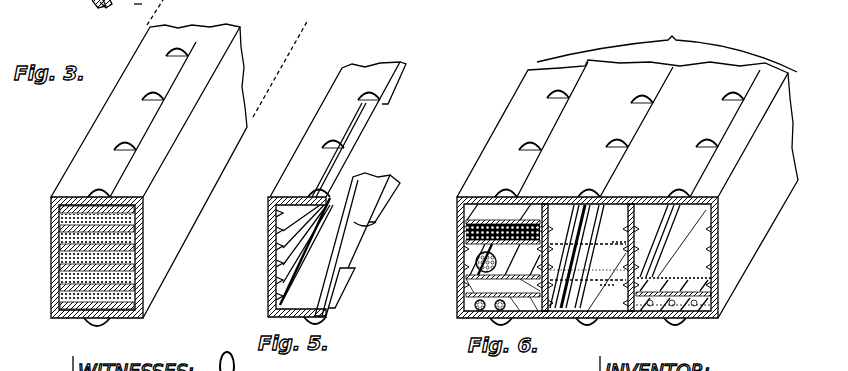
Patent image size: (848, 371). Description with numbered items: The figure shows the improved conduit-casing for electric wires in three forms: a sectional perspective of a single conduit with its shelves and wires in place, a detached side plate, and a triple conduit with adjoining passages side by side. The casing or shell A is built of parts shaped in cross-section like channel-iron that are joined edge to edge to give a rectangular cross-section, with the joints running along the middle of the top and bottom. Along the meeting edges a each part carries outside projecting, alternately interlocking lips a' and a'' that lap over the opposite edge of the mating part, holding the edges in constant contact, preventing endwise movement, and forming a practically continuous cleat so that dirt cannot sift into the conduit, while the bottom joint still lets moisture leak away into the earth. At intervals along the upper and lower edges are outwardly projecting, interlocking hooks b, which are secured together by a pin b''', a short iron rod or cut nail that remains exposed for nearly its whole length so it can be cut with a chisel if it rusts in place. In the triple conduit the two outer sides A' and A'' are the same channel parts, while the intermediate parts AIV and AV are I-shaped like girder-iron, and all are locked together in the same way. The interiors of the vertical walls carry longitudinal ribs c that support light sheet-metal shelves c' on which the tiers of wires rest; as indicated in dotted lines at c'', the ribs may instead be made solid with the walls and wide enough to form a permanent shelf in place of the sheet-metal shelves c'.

In FIG. 6, the casing or shell of the conduit A is at (627, 107).
In FIG. 6, the outer side part of the conduit-casing A' is at (487, 258).
In FIG. 6, the outer side part of the conduit-casing A'' is at (758, 195).
In FIG. 6, the intermediate part of the conduit-casing AIV is at (586, 233).
In FIG. 6, the intermediate part of the conduit-casing AV is at (673, 237).
In FIG. 3, the meeting edges a is at (92, 188).
In FIG. 5, the meeting edges a is at (352, 213).
In FIG. 6, the meeting edges a is at (575, 243).
In FIG. 3, the interlocking projection or lip a' is at (118, 204).
In FIG. 5, the interlocking projection or lip a' is at (349, 184).
In FIG. 6, the interlocking projection or lip a' is at (592, 200).
In FIG. 3, the interlocking projection or lip a'' is at (154, 113).
In FIG. 6, the interlocking projection or lip a'' is at (725, 133).
In FIG. 3, the lug or hook b is at (111, 10).
In FIG. 3, the pin b''' is at (83, 10).
In FIG. 3, the longitudinally-arranged rib c is at (84, 257).
In FIG. 5, the longitudinally-arranged rib c is at (308, 251).
In FIG. 6, the longitudinally-arranged rib c is at (570, 248).
In FIG. 3, the shelf c' is at (81, 257).
In FIG. 6, the shelf c' is at (575, 282).
In FIG. 6, the solid rib shelf c'' is at (604, 261).